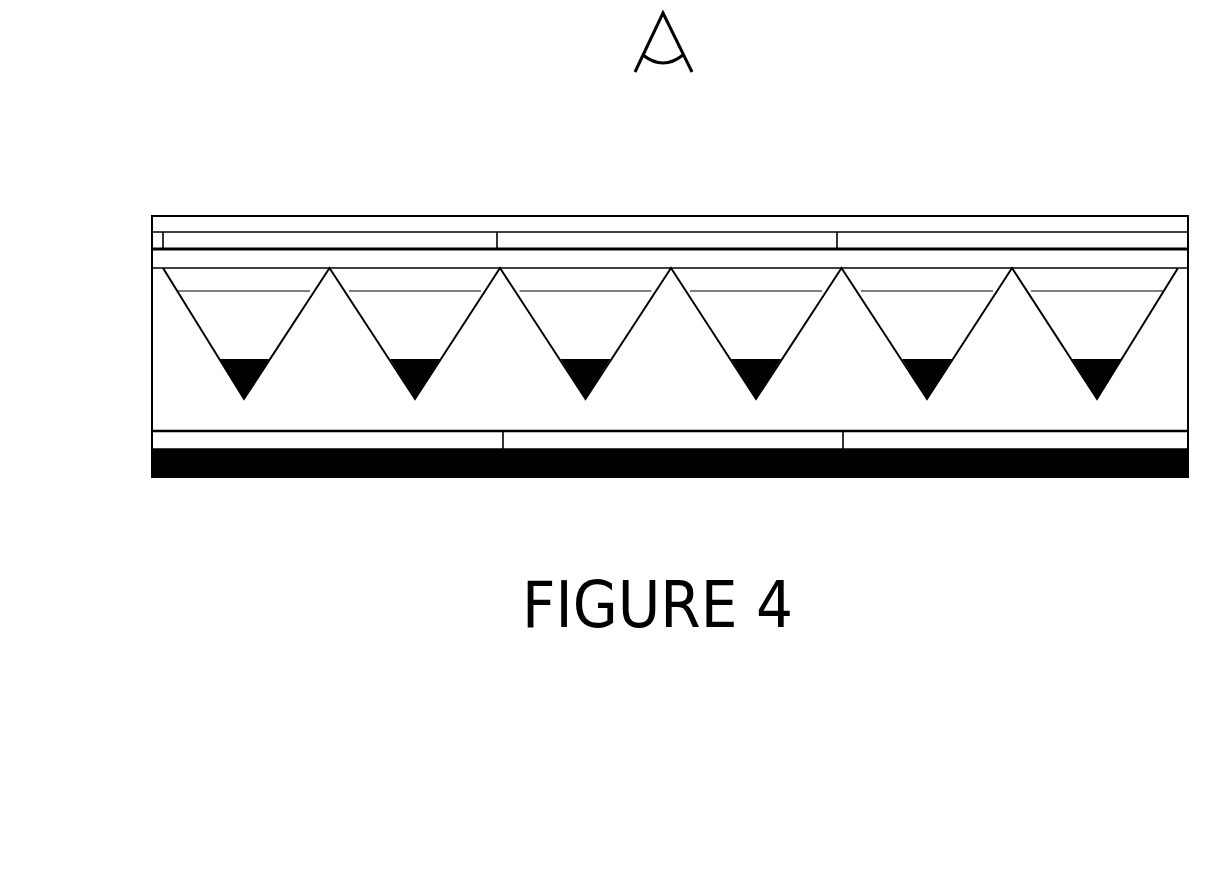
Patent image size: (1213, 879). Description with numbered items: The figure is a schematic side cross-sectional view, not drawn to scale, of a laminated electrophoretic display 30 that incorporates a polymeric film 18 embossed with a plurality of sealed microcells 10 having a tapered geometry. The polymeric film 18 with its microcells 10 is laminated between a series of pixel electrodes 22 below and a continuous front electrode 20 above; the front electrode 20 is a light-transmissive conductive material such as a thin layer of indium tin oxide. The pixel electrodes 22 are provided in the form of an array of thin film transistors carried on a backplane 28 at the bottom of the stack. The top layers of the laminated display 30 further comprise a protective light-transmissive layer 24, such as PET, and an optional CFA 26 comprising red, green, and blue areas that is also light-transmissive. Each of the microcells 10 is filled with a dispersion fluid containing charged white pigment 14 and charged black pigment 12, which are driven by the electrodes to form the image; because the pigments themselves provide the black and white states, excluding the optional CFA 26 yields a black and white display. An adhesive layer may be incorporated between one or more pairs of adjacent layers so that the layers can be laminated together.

The microcells 10 is at (197, 329).
The charged black pigment 12 is at (226, 378).
The charged white pigment 14 is at (172, 283).
The polymeric film 18 is at (152, 402).
The front electrode 20 is at (152, 257).
The pixel electrodes 22 is at (152, 437).
The protective light-transmissive layer 24 is at (152, 216).
The CFA 26 is at (152, 238).
The backplane 28 is at (152, 468).
The electrophoretic display 30 is at (1090, 134).